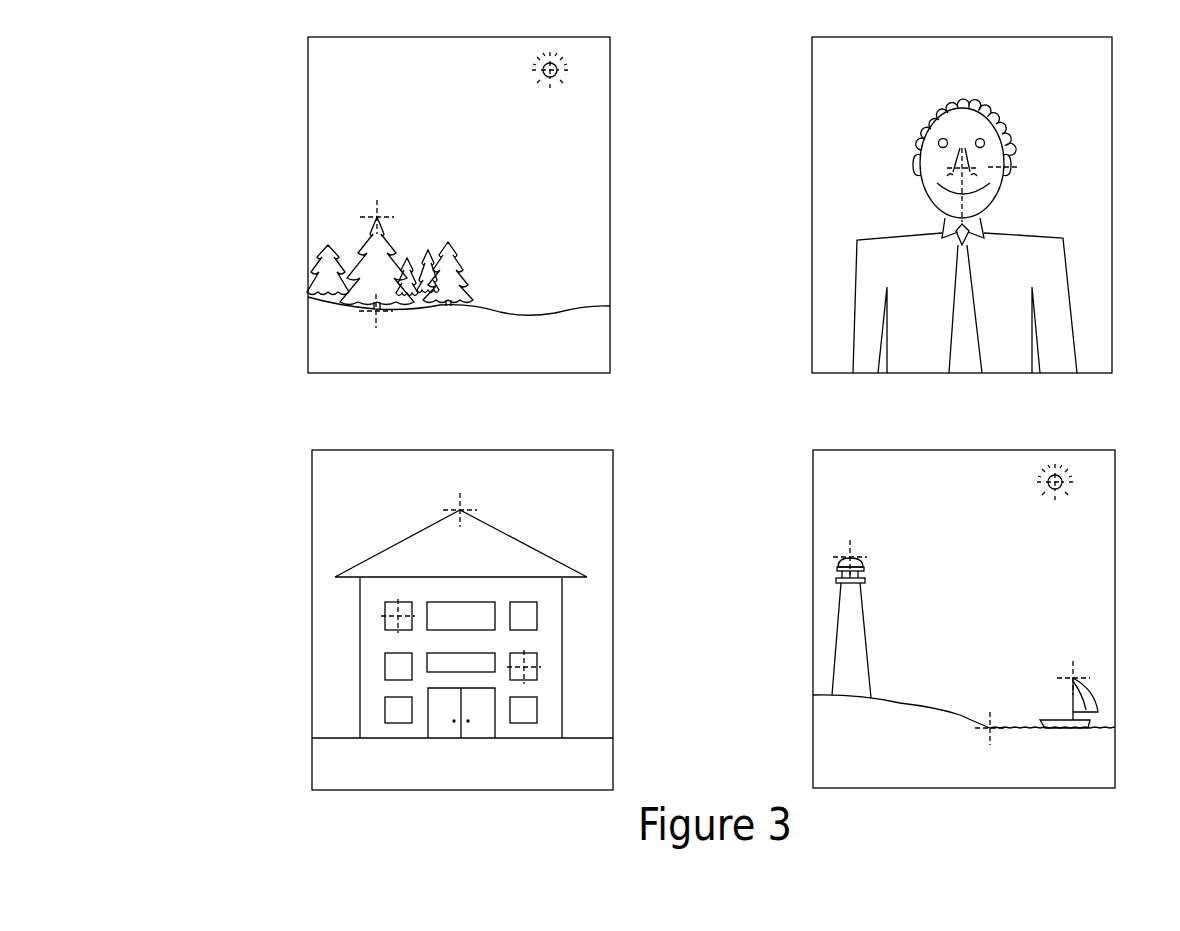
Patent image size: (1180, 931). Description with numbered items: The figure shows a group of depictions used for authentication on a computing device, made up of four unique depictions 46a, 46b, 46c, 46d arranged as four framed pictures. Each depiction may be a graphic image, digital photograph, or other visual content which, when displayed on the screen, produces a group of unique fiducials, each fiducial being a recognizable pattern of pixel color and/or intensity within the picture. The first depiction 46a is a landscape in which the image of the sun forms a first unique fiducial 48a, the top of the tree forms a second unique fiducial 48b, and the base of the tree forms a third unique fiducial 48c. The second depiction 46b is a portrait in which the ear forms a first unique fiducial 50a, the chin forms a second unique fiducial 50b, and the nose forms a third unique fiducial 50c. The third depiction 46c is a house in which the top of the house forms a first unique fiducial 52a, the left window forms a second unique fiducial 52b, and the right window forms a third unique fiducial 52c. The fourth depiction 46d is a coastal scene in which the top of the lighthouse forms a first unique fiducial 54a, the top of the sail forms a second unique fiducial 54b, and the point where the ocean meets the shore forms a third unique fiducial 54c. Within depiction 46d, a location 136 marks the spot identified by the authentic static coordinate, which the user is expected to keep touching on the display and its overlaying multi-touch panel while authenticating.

The depiction 46a is at (610, 118).
The depiction 46b is at (1112, 118).
The depiction 46c is at (613, 522).
The depiction 46d is at (1115, 522).
The first unique fiducial 48a is at (545, 78).
The second unique fiducial 48b is at (378, 216).
The third unique fiducial 48c is at (378, 312).
The first unique fiducial 50a is at (1005, 165).
The second unique fiducial 50b is at (940, 226).
The third unique fiducial 50c is at (950, 176).
The first unique fiducial 52a is at (462, 508).
The second unique fiducial 52b is at (528, 664).
The third unique fiducial 52c is at (393, 615).
The first unique fiducial 54a is at (1071, 677).
The second unique fiducial 54b is at (852, 556).
The third unique fiducial 54c is at (988, 730).
The location 136 is at (1048, 490).